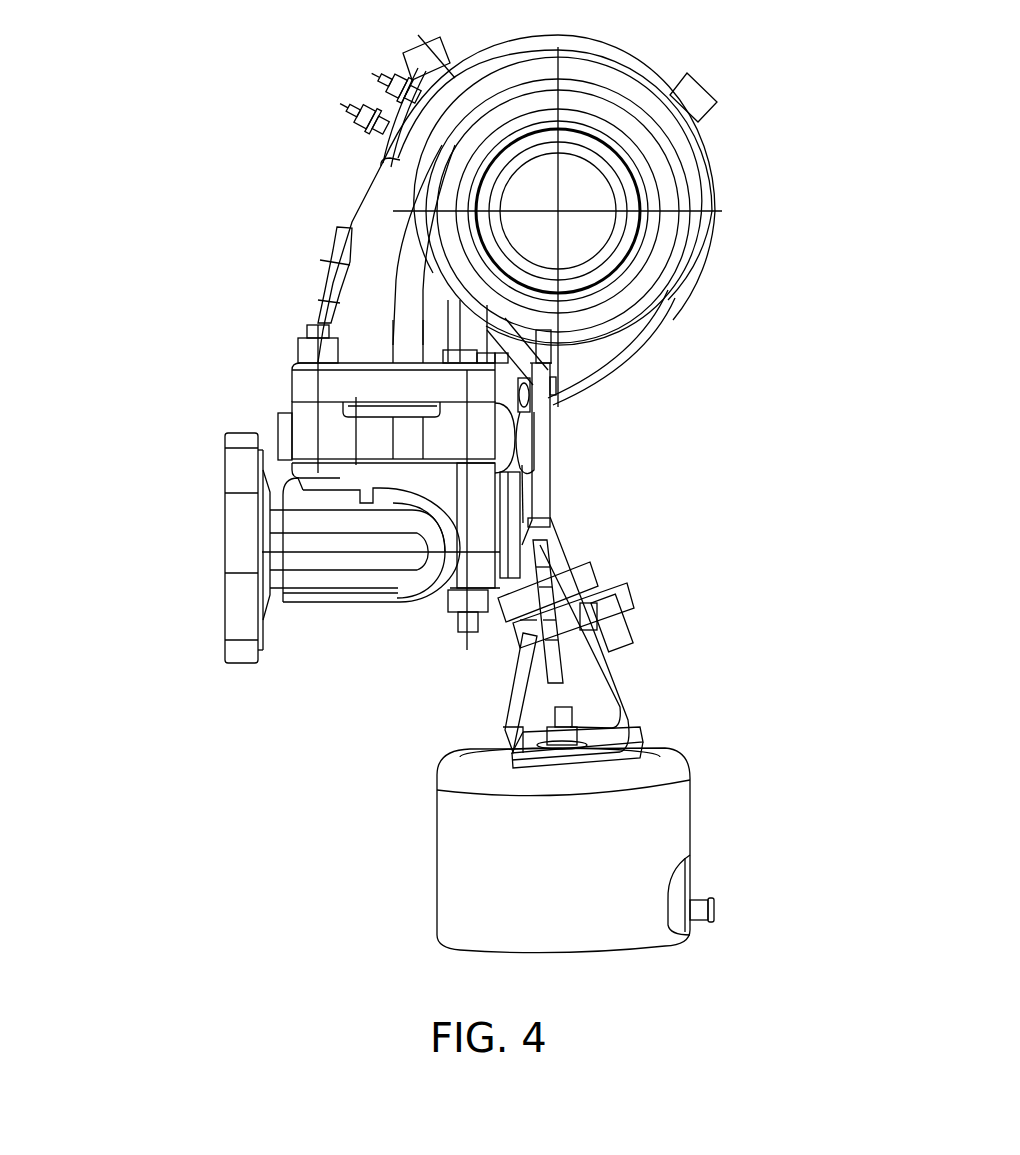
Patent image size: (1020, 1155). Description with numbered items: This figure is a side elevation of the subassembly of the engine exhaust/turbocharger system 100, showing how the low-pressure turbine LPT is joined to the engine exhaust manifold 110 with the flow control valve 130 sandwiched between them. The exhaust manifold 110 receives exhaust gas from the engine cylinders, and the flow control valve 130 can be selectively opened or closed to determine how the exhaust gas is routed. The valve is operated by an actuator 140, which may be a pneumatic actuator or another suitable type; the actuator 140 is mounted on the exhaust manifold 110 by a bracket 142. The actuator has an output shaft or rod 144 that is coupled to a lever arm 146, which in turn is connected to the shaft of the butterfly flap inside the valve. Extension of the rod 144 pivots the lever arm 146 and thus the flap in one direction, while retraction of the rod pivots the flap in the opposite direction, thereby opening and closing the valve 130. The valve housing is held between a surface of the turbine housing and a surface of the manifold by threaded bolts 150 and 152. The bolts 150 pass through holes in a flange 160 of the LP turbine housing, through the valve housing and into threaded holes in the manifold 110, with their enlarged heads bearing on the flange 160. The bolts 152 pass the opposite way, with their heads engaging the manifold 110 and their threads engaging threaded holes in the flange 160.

The engine exhaust/turbocharger system 100 is at (732, 141).
The LP turbine LPT is at (393, 173).
The exhaust manifold 110 is at (340, 606).
The flow control valve 130 is at (300, 409).
The actuator 140 is at (472, 838).
The bracket 142 is at (522, 685).
The output shaft or rod 144 is at (550, 427).
The lever arm 146 is at (532, 413).
The threaded bolts 150 is at (305, 330).
The threaded bolts 152 is at (453, 627).
The flange of the LP turbine housing 160 is at (298, 375).